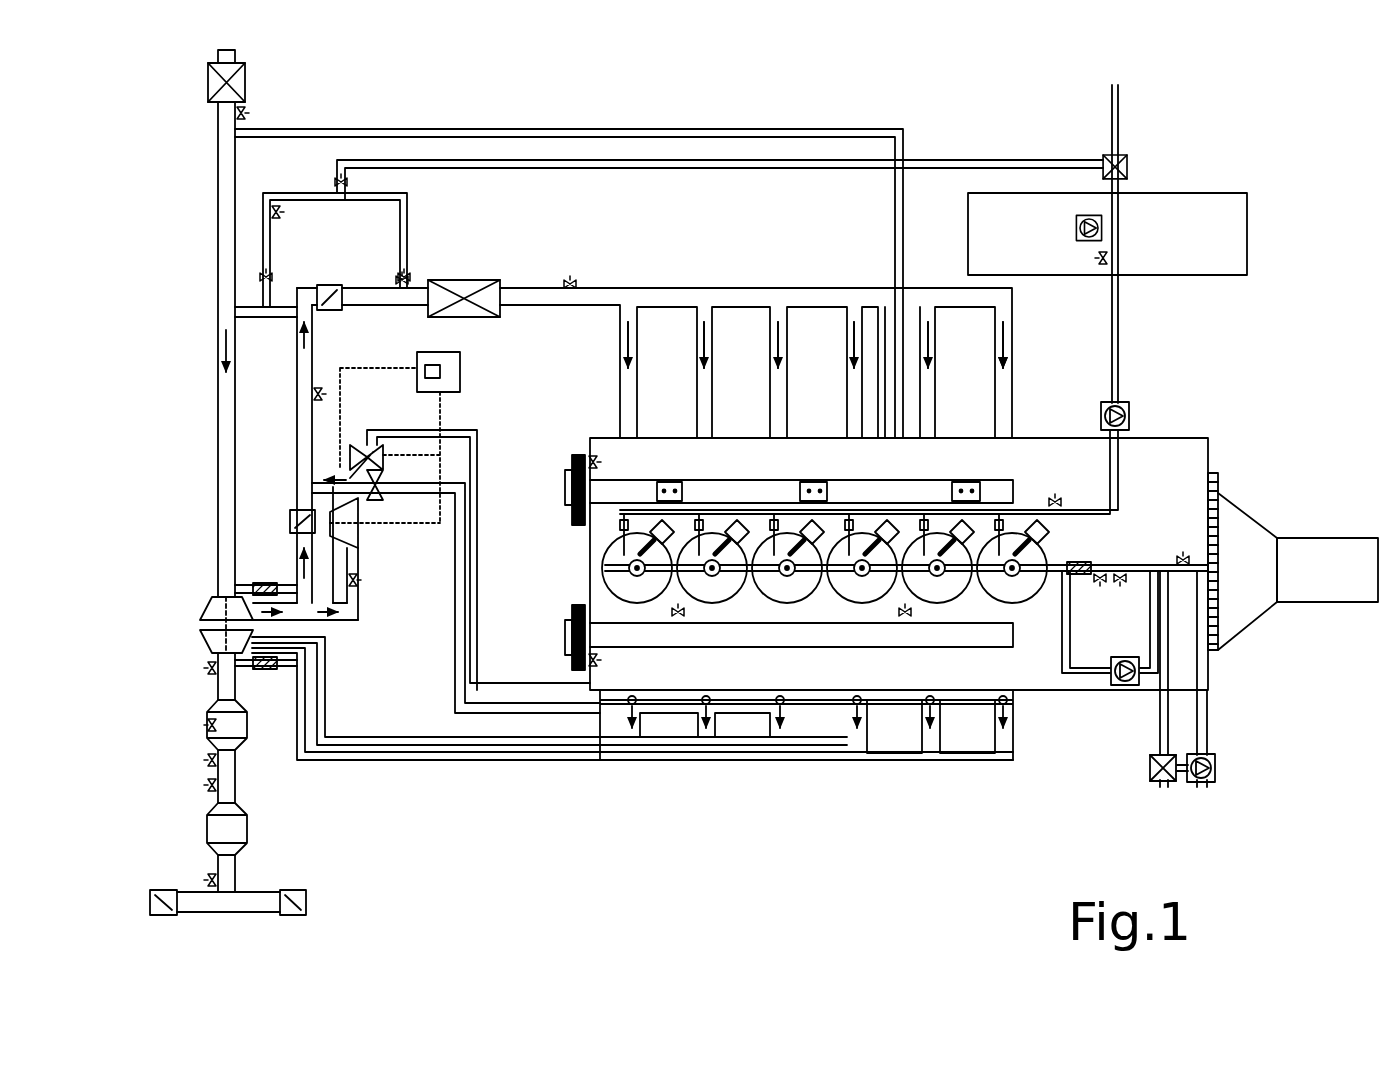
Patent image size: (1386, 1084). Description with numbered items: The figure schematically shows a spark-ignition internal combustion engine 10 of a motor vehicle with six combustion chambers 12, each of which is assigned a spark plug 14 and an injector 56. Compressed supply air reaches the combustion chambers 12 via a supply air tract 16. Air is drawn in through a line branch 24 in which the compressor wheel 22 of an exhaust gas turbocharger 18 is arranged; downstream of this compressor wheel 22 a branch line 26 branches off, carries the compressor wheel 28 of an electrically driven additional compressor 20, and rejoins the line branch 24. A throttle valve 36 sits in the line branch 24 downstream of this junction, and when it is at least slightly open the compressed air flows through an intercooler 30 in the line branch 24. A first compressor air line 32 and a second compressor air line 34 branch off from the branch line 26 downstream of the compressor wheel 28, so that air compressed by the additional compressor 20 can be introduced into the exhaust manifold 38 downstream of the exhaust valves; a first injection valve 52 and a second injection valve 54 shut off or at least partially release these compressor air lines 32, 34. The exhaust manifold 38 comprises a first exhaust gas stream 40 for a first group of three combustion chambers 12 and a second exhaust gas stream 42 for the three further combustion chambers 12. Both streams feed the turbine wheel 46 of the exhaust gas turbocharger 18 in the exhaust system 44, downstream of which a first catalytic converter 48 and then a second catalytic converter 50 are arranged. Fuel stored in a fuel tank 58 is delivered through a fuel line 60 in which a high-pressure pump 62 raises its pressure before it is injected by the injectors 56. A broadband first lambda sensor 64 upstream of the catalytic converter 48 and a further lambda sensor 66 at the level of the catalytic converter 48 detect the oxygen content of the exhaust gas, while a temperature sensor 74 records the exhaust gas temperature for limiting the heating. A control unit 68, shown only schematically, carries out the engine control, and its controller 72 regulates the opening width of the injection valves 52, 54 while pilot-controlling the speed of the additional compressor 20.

The internal combustion engine 10 is at (1192, 414).
The combustion chambers 12 is at (605, 569).
The spark plugs 14 is at (664, 528).
The supply air tract 16 is at (692, 266).
The exhaust gas turbocharger 18 is at (200, 630).
The additional compressor 20 is at (360, 566).
The compressor wheel 22 is at (206, 600).
The line branch 24 is at (222, 488).
The branch line 26 is at (352, 608).
The compressor wheel 28 is at (360, 540).
The intercooler 30 is at (466, 282).
The first compressor air line 32 is at (466, 482).
The second compressor air line 34 is at (478, 430).
The throttle valve 36 is at (330, 285).
The exhaust manifold 38 is at (815, 768).
The first exhaust gas stream 40 is at (668, 740).
The second exhaust gas stream 42 is at (895, 755).
The exhaust system 44 is at (203, 699).
The turbine wheel 46 is at (210, 652).
The first catalytic converter 48 is at (248, 742).
The second catalytic converter 50 is at (248, 829).
The first injection valve 52 is at (400, 488).
The second injection valve 54 is at (366, 445).
The injectors 56 is at (855, 520).
The fuel tank 58 is at (1172, 215).
The fuel line 60 is at (1120, 332).
The high-pressure pump 62 is at (1128, 410).
The first lambda sensor 64 is at (208, 676).
The further lambda sensor 66 is at (208, 729).
The control unit 68 is at (478, 372).
The controller 72 is at (430, 372).
The temperature sensor 74 is at (210, 790).